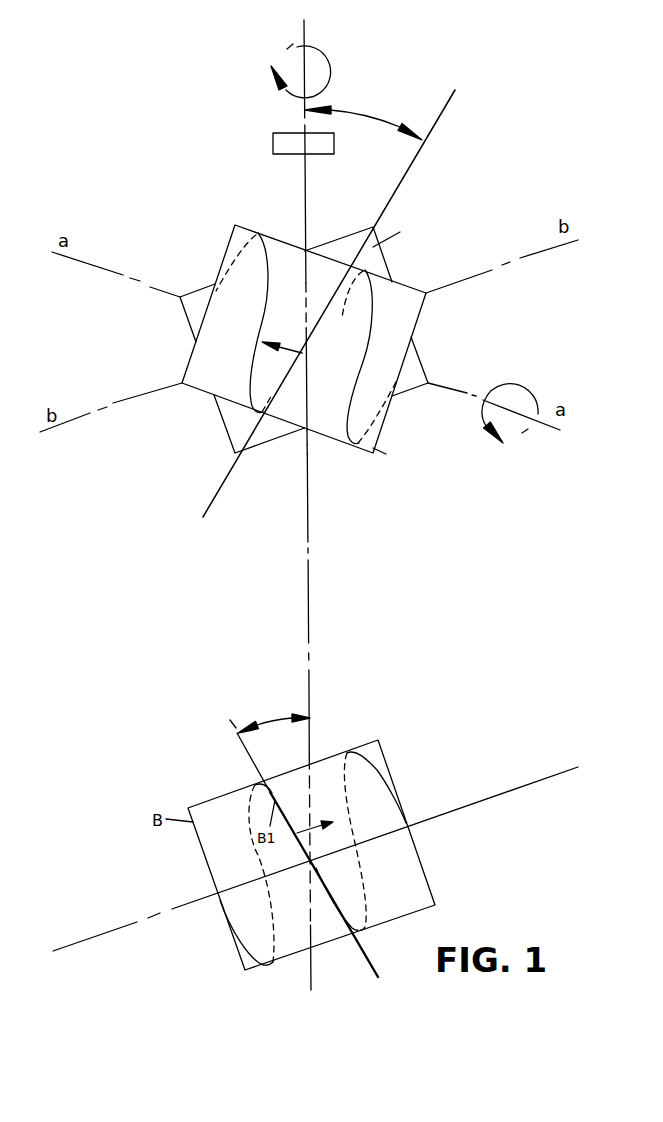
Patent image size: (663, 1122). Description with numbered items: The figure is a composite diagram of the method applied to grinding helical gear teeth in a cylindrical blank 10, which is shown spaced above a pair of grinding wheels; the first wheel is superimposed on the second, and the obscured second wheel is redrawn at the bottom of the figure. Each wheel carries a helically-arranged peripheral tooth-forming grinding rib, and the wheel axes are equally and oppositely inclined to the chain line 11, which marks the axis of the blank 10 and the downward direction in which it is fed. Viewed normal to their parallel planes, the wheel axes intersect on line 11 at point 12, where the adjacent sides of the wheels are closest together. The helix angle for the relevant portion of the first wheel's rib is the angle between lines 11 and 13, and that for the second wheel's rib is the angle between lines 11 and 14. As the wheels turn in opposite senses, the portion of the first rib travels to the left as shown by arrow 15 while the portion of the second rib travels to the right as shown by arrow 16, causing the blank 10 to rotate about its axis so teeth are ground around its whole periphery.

The cylindrical blank 10 is at (328, 143).
The chain line 11 is at (304, 27).
The point 12 is at (307, 343).
The line 13 is at (443, 112).
The line 14 is at (250, 757).
The arrow 15 is at (275, 343).
The arrow 16 is at (315, 825).